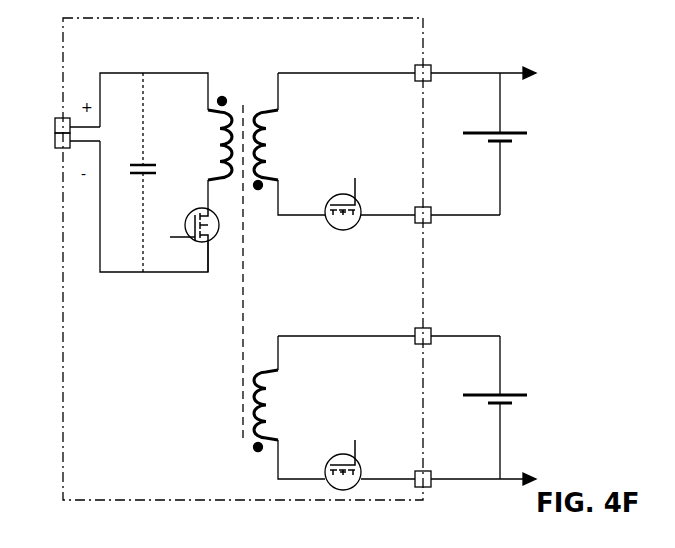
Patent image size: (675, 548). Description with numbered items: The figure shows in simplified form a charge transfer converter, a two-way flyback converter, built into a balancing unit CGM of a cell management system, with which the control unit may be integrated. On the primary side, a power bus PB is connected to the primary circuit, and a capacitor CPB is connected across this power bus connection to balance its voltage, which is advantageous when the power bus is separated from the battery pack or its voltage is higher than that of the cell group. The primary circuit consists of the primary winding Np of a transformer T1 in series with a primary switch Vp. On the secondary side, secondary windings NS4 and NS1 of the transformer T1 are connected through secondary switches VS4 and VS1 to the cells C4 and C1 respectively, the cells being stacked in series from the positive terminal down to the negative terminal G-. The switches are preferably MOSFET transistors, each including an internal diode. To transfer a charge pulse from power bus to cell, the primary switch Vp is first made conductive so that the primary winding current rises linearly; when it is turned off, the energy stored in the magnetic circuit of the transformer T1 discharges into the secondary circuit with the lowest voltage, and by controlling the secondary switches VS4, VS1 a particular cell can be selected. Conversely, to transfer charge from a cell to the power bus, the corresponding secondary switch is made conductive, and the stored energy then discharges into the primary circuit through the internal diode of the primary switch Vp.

The balancing unit CGM is at (243, 259).
The power bus PB is at (62, 133).
The capacitor CPB is at (130, 172).
The transformer T1 is at (237, 254).
The primary winding Np is at (201, 139).
The secondary winding NS4 is at (284, 150).
The secondary winding NS1 is at (284, 411).
The primary switch Vp is at (194, 226).
The secondary switch VS4 is at (358, 204).
The secondary switch VS1 is at (358, 465).
The cell C4 is at (497, 144).
The cell C1 is at (497, 407).
The negative terminal G- is at (528, 455).